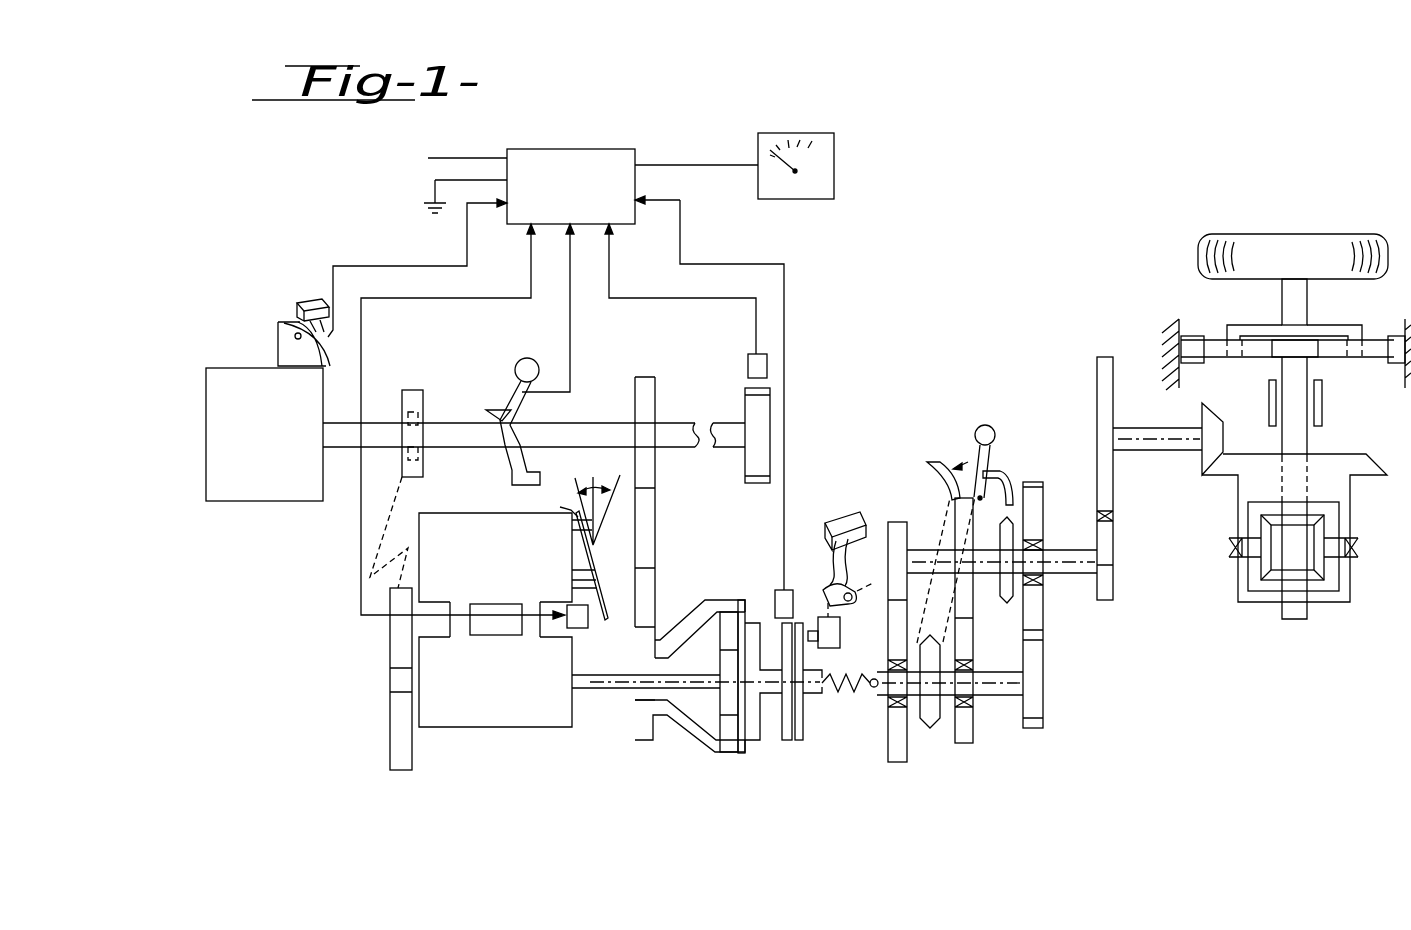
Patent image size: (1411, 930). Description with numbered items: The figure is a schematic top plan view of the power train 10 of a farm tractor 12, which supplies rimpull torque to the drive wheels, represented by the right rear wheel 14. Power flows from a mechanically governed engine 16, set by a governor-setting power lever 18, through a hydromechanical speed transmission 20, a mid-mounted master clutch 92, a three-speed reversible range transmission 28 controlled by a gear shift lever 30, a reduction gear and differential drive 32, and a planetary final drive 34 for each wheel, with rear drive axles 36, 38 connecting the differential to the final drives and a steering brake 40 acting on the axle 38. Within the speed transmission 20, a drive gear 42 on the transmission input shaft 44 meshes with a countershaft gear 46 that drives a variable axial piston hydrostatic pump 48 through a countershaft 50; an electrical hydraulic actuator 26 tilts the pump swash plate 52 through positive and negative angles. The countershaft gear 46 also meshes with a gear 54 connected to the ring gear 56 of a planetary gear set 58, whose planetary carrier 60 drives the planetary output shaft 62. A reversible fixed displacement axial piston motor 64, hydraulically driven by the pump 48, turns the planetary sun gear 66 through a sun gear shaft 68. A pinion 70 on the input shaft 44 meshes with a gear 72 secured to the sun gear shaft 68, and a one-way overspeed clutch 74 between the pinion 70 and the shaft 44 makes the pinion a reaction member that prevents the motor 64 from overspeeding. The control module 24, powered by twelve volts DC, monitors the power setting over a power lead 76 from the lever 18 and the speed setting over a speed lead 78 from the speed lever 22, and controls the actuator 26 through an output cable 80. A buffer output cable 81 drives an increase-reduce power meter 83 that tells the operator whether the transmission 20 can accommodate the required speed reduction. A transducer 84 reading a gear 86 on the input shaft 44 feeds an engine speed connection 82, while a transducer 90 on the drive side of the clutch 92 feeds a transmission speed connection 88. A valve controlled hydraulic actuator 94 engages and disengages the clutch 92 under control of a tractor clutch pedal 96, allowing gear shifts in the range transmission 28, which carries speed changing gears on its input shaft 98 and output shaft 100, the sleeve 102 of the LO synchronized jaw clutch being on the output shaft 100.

The power train 10 is at (868, 383).
The farm tractor 12 is at (318, 520).
The right rear wheel 14 is at (1282, 240).
The mechanically governed engine 16 is at (272, 481).
The governor-setting power lever 18 is at (310, 299).
The hydromechanical speed transmission 20 is at (586, 728).
The speed lever 22 is at (528, 358).
The control module 24 is at (540, 151).
The electrical hydraulic actuator 26 is at (580, 622).
The range transmission 28 is at (1081, 718).
The gear shift lever 30 is at (996, 432).
The reduction gear and differential drive 32 is at (1188, 498).
The planetary final drive 34 is at (1330, 312).
The rear drive axle 36 is at (1295, 608).
The rear drive axle 38 is at (1310, 437).
The steering brake 40 is at (1322, 402).
The drive gear 42 is at (657, 387).
The transmission input shaft 44 is at (585, 424).
The countershaft gear 46 is at (657, 520).
The variable axial piston hydrostatic pump 48 is at (437, 513).
The countershaft 50 is at (603, 560).
The pump swash plate 52 is at (578, 472).
The gear 54 is at (649, 634).
The ring gear 56 is at (737, 600).
The planetary gear set 58 is at (752, 758).
The planetary carrier 60 is at (751, 622).
The planetary output shaft 62 is at (772, 700).
The fixed displacement axial piston motor 64 is at (487, 728).
The planetary sun gear 66 is at (728, 664).
The sun gear shaft 68 is at (620, 703).
The pinion 70 is at (423, 393).
The gear 72 is at (393, 657).
The one-way overspeed clutch 74 is at (402, 415).
The power lead 76 is at (410, 264).
The speed lead 78 is at (572, 349).
The output cable 80 is at (485, 298).
The buffer output cable 81 is at (686, 165).
The engine speed connection 82 is at (632, 298).
The increase-reduce power meter 83 is at (834, 181).
The transducer 84 is at (767, 368).
The gear 86 is at (770, 412).
The transmission speed connection 88 is at (787, 283).
The transducer 90 is at (790, 598).
The master clutch 92 is at (796, 741).
The valve controlled hydraulic actuator 94 is at (840, 640).
The tractor clutch pedal 96 is at (850, 508).
The input shaft 98 is at (1003, 696).
The output shaft 100 is at (1070, 576).
The sleeve 102 is at (1010, 527).